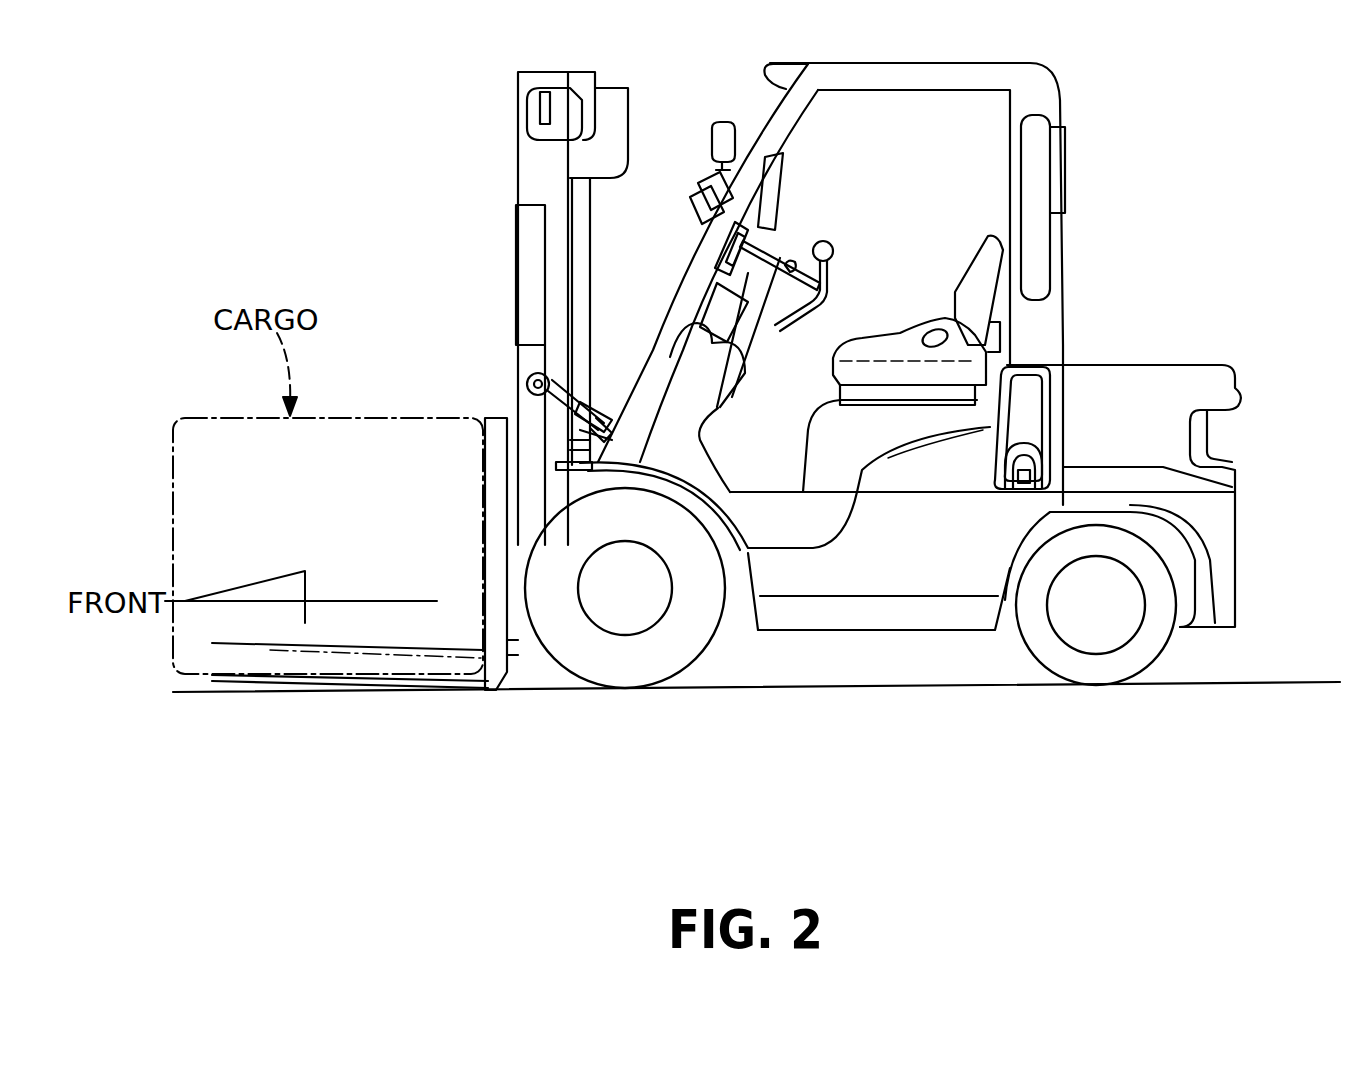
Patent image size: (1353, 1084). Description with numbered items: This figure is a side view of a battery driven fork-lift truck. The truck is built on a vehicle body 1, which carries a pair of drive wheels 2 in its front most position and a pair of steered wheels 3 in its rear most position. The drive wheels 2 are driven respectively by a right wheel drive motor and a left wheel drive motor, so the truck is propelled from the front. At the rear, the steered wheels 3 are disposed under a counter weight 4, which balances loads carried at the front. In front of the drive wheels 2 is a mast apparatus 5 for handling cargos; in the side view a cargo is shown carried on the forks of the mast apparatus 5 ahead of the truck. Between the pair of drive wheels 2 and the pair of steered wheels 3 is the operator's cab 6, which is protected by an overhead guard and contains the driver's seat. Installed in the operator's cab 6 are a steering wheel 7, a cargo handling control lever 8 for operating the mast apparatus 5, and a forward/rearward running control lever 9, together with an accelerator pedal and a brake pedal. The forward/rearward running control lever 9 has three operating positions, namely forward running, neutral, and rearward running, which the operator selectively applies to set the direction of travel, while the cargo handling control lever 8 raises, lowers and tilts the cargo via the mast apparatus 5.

The vehicle body 1 is at (880, 641).
The drive wheels 2 is at (592, 667).
The steered wheels 3 is at (1068, 664).
The counter weight 4 is at (1218, 382).
The mast apparatus 5 is at (511, 391).
The operator's cab 6 is at (989, 242).
The steering wheel 7 is at (777, 250).
The cargo handling control lever 8 is at (848, 264).
The forward/rearward running control lever 9 is at (833, 246).